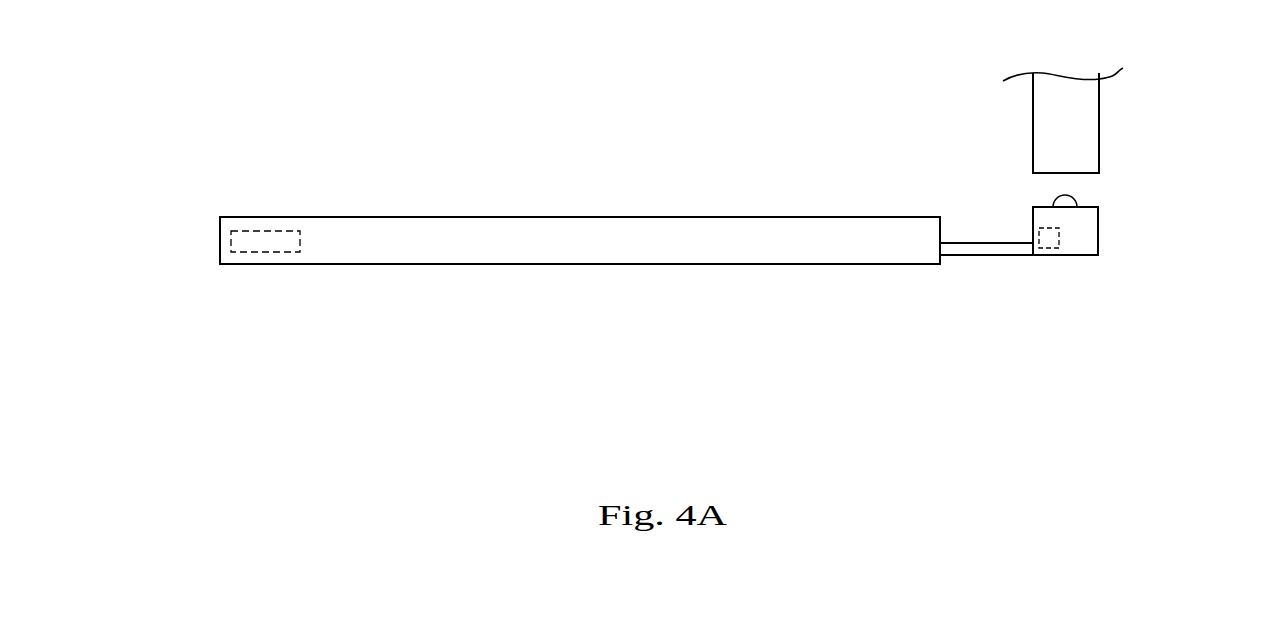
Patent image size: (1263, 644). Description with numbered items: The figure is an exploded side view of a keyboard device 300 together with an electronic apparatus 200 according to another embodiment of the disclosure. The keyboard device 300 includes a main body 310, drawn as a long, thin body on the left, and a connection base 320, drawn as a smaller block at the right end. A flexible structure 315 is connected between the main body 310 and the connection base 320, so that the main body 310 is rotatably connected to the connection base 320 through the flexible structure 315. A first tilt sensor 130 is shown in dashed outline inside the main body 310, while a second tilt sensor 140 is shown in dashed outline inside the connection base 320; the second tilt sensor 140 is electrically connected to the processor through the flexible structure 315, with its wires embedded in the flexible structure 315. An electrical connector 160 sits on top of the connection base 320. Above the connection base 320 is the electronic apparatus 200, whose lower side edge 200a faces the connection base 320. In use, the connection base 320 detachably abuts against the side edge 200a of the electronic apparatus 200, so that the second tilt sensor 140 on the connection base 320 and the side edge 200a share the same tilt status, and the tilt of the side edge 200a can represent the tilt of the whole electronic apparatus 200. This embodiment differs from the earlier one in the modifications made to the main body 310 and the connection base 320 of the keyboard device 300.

The keyboard device 300 is at (312, 118).
The main body 310 is at (593, 258).
The first tilt sensor 130 is at (283, 253).
The flexible structure 315 is at (975, 250).
The connection base 320 is at (1085, 228).
The second tilt sensor 140 is at (1054, 248).
The electrical connector 160 is at (1073, 200).
The electronic apparatus 200 is at (1085, 125).
The side edge 200a is at (1082, 175).